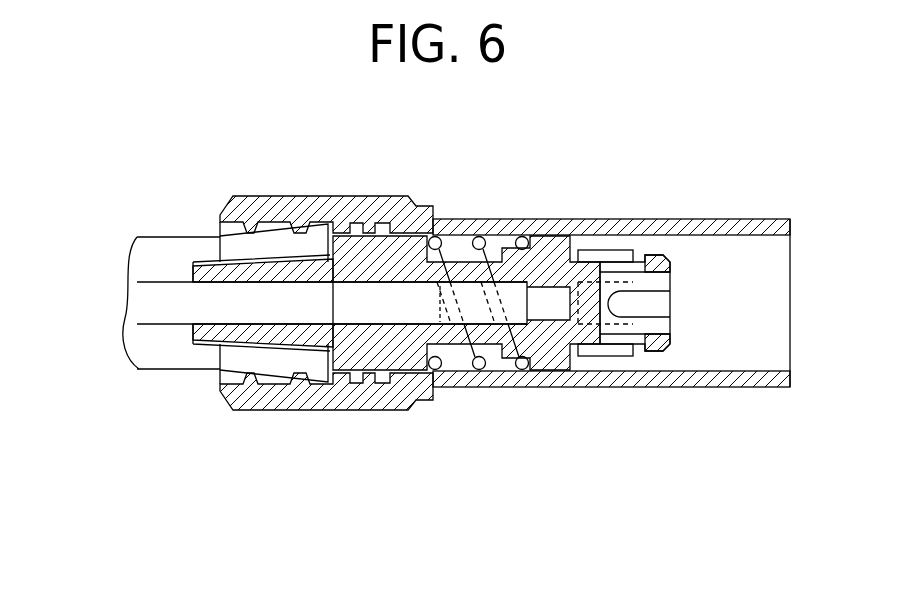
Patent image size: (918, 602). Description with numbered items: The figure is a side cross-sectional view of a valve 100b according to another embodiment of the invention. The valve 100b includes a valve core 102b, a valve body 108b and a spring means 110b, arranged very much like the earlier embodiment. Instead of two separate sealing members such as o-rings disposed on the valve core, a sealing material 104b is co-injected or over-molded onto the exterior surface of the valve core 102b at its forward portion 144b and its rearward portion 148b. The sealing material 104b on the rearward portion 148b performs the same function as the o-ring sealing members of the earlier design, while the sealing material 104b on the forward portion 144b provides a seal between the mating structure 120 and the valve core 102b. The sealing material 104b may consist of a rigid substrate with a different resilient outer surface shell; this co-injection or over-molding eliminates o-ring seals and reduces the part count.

The valve 100b is at (355, 455).
The valve core 102b is at (410, 226).
The sealing material 104b is at (287, 354).
The valve body 108b is at (597, 218).
The spring means 110b is at (488, 226).
The mating structure 120 is at (160, 362).
The forward portion 144b is at (217, 363).
The rearward portion 148b is at (587, 350).